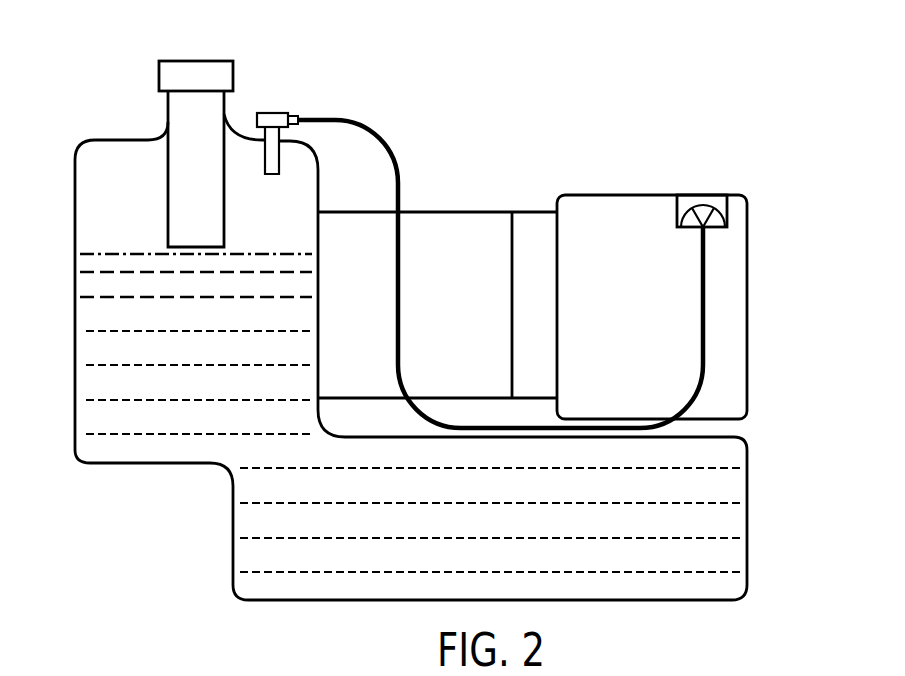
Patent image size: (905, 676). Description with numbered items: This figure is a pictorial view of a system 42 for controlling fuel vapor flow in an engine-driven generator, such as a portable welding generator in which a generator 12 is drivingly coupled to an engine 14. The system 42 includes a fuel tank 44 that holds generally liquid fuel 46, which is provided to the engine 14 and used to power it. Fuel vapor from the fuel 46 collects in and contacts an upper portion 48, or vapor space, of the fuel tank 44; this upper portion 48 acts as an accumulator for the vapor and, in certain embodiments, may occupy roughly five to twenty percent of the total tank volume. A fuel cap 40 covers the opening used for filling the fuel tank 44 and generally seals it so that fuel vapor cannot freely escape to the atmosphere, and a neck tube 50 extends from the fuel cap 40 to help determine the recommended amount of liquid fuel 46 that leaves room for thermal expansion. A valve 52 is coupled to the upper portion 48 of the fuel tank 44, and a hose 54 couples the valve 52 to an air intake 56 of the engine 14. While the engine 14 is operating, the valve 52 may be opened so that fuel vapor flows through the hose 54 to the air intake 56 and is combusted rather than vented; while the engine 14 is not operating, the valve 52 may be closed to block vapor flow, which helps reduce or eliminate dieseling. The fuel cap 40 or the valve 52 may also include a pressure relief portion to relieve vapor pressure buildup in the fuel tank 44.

The generator 12 is at (336, 373).
The engine 14 is at (737, 305).
The fuel cap 40 is at (196, 61).
The system for controlling fuel vapor flow 42 is at (100, 63).
The fuel tank 44 is at (742, 592).
The fuel 46 is at (383, 587).
The upper portion 48 is at (73, 190).
The neck tube 50 is at (174, 143).
The valve 52 is at (277, 113).
The hose 54 is at (687, 410).
The air intake 56 is at (678, 210).